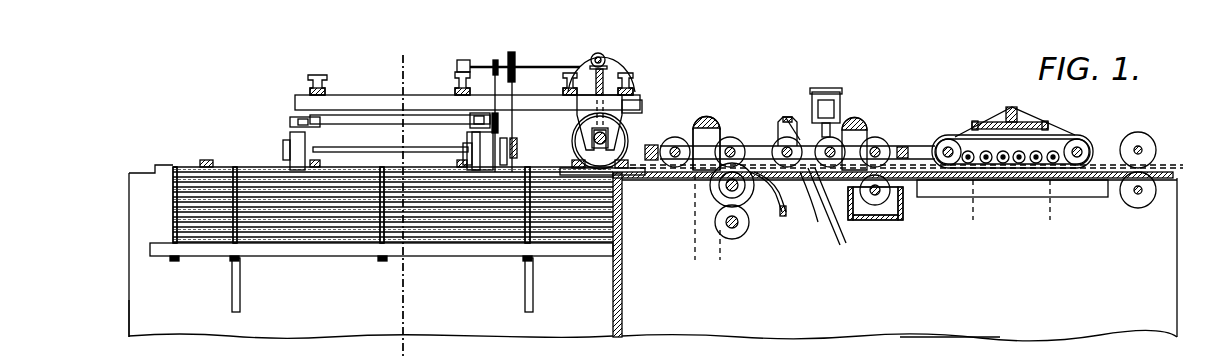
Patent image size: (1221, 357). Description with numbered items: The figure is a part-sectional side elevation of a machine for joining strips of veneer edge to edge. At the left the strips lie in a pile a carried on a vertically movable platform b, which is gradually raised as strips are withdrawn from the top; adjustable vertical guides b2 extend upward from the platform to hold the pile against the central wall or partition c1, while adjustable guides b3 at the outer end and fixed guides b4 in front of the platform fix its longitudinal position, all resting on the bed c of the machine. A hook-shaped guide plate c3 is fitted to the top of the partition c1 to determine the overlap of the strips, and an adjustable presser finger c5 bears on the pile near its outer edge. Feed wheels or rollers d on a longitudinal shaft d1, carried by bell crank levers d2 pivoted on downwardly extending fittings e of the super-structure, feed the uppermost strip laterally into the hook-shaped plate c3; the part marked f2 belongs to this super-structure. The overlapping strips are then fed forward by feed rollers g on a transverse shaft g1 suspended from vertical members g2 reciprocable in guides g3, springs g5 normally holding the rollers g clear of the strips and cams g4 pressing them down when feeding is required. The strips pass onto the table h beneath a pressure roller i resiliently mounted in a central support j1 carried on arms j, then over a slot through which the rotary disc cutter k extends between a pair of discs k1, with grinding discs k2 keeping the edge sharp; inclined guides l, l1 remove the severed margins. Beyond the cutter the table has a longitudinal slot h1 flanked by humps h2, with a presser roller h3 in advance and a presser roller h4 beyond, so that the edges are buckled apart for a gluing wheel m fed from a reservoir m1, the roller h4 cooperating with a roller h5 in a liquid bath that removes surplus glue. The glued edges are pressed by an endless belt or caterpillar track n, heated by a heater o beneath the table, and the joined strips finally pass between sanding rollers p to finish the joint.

The pile of strips a is at (207, 232).
The vertically movable platform b is at (265, 246).
The adjustable vertically disposed guides b2 is at (237, 174).
The adjustable guides b3 is at (173, 210).
The fixed guides b4 is at (622, 285).
The bed of the machine c is at (927, 309).
The wall or partition c1 is at (244, 316).
The hook-shaped guide plate c3 is at (184, 164).
The adjustable stop or presser finger c5 is at (206, 160).
The feed wheels or rollers d is at (298, 150).
The longitudinally disposed shaft d1 is at (364, 147).
The bell crank levers d2 is at (318, 133).
The downwardly extending fittings e is at (318, 137).
The cross bar f2 is at (396, 105).
The feed rollers g is at (706, 116).
The transverse shaft g1 is at (607, 135).
The vertically disposed members g2 is at (612, 66).
The guides g3 is at (607, 117).
The cams g4 is at (596, 56).
The springs g5 is at (577, 67).
The table h is at (808, 196).
The longitudinal slot h1 is at (840, 230).
The humps h2 is at (826, 236).
The presser roller h3 is at (824, 110).
The presser roller h4 is at (876, 142).
The roller h5 is at (905, 215).
The pressure roller i is at (654, 144).
The arms j is at (737, 130).
The central longitudinally extending support j1 is at (752, 150).
The rotary disc cutting device k is at (722, 198).
The pair of discs k1 is at (737, 146).
The grinding discs k2 is at (734, 230).
The upwardly inclined guide l is at (789, 140).
The downwardly inclined guide l1 is at (784, 212).
The gluing wheel m is at (832, 148).
The glue reservoir m1 is at (842, 93).
The endless belt or caterpillar track n is at (957, 136).
The heater o is at (1013, 190).
The sanding rollers p is at (1127, 146).